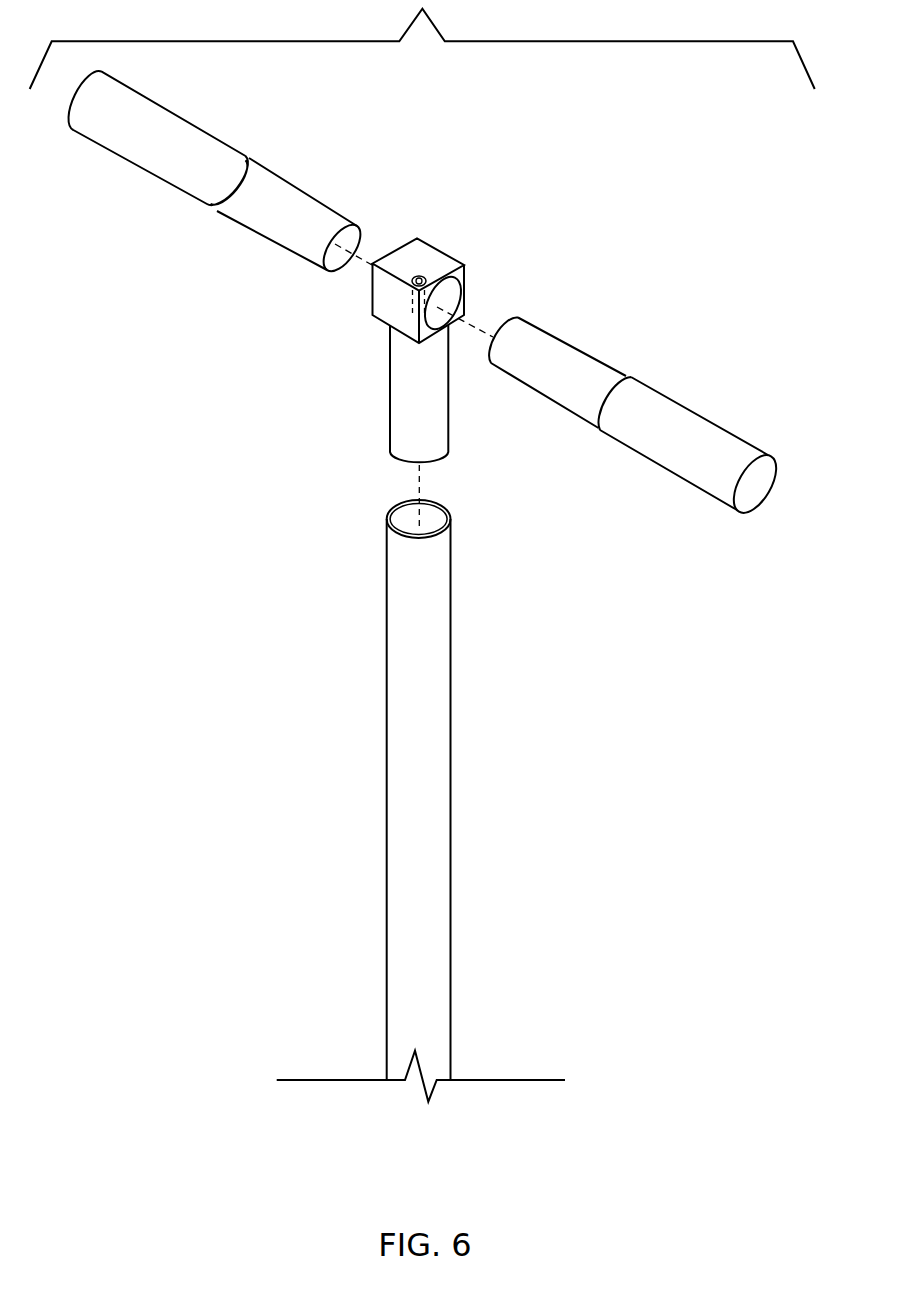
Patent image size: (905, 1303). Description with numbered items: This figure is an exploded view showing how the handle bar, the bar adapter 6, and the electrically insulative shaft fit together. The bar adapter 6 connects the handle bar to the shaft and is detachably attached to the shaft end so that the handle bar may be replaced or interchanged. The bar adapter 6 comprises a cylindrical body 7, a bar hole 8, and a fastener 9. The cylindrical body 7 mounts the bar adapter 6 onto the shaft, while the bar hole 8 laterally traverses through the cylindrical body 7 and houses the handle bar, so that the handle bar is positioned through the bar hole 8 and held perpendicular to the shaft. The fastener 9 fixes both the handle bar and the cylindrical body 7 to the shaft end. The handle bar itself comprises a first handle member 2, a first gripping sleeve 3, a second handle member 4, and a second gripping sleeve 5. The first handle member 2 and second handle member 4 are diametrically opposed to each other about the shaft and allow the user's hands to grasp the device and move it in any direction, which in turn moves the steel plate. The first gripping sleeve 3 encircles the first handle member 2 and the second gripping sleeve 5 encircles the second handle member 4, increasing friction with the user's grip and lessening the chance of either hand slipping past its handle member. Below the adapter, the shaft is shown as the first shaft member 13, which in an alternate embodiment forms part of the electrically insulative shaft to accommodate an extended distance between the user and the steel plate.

The first handle member 2 is at (278, 205).
The first gripping sleeve 3 is at (169, 121).
The second handle member 4 is at (557, 367).
The second gripping sleeve 5 is at (685, 422).
The bar adapter 6 is at (355, 312).
The cylindrical body 7 is at (432, 402).
The bar hole 8 is at (443, 299).
The fastener 9 is at (420, 278).
The first shaft member 13 is at (435, 732).